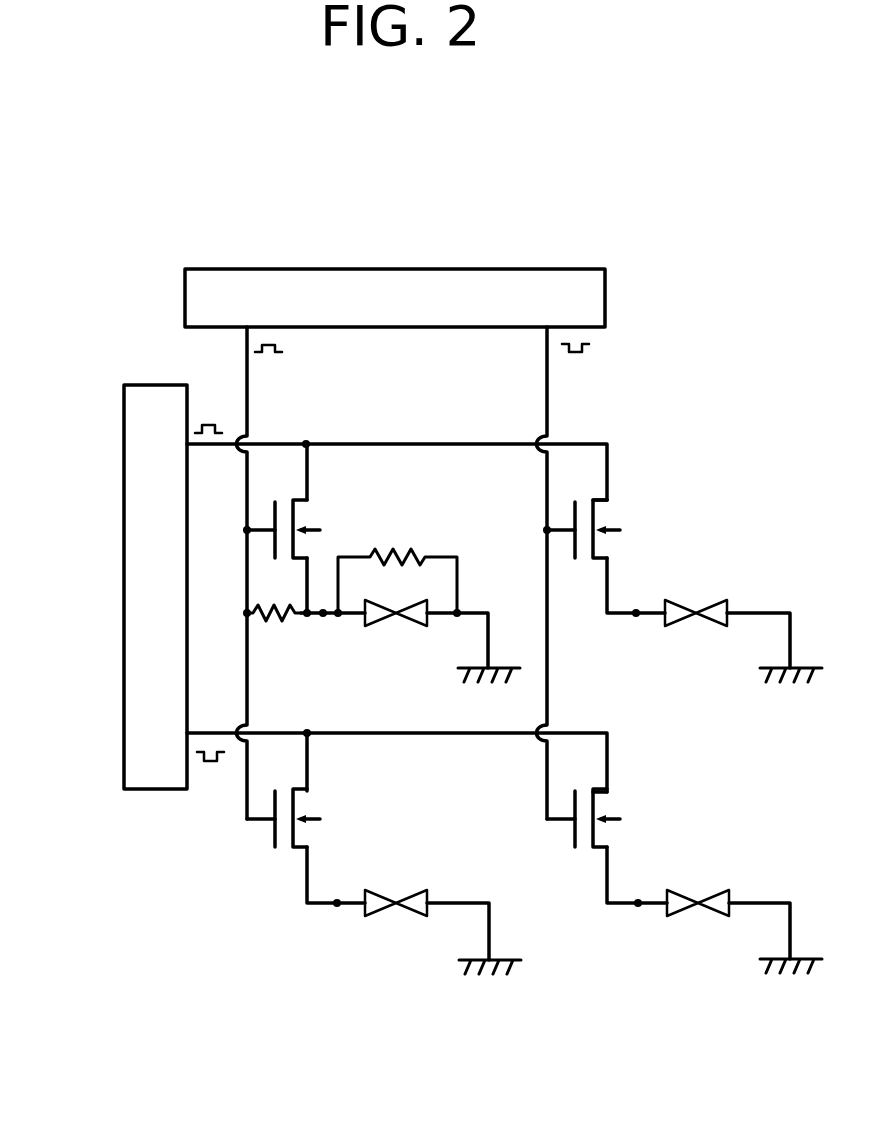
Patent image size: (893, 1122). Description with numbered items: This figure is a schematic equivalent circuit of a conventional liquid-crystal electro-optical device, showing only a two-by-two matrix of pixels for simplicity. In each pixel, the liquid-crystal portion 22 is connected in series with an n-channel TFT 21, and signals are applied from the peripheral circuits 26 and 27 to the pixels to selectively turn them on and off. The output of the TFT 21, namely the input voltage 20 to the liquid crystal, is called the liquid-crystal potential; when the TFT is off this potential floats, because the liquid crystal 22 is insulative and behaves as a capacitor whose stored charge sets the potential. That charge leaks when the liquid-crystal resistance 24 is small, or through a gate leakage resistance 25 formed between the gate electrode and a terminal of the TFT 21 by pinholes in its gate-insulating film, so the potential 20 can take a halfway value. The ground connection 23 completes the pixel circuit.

The input voltage VLC 20 is at (318, 622).
The n-channel TFT 21 is at (310, 516).
The liquid-crystal portion 22 is at (415, 620).
The ground 23 is at (485, 608).
The resistance RLC 24 is at (424, 556).
The resistance RGS 25 is at (265, 605).
The peripheral circuit 26 is at (412, 283).
The peripheral circuit 27 is at (133, 720).